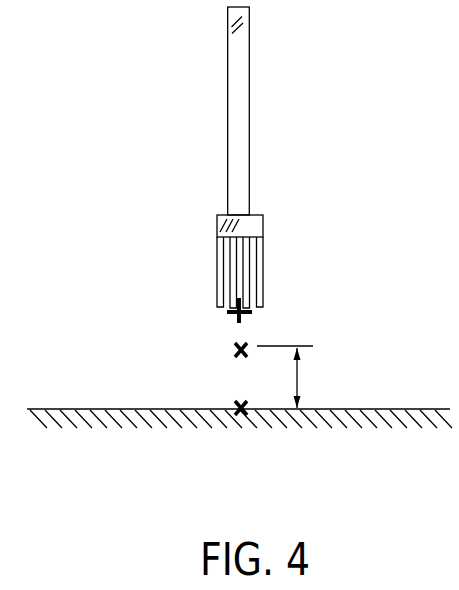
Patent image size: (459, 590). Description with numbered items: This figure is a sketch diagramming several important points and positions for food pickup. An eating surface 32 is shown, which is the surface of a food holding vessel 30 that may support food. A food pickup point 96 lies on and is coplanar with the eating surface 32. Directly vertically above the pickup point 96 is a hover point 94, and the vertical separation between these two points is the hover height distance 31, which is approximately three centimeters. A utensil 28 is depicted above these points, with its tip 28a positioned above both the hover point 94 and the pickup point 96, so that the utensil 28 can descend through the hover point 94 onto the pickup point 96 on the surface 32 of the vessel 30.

The utensil 28 is at (262, 186).
The tip 28a is at (248, 314).
The hover point 94 is at (234, 345).
The hover height distance 31 is at (297, 378).
The eating surface 32 is at (65, 408).
The food holding vessel 30 is at (108, 420).
The food pickup point 96 is at (241, 416).